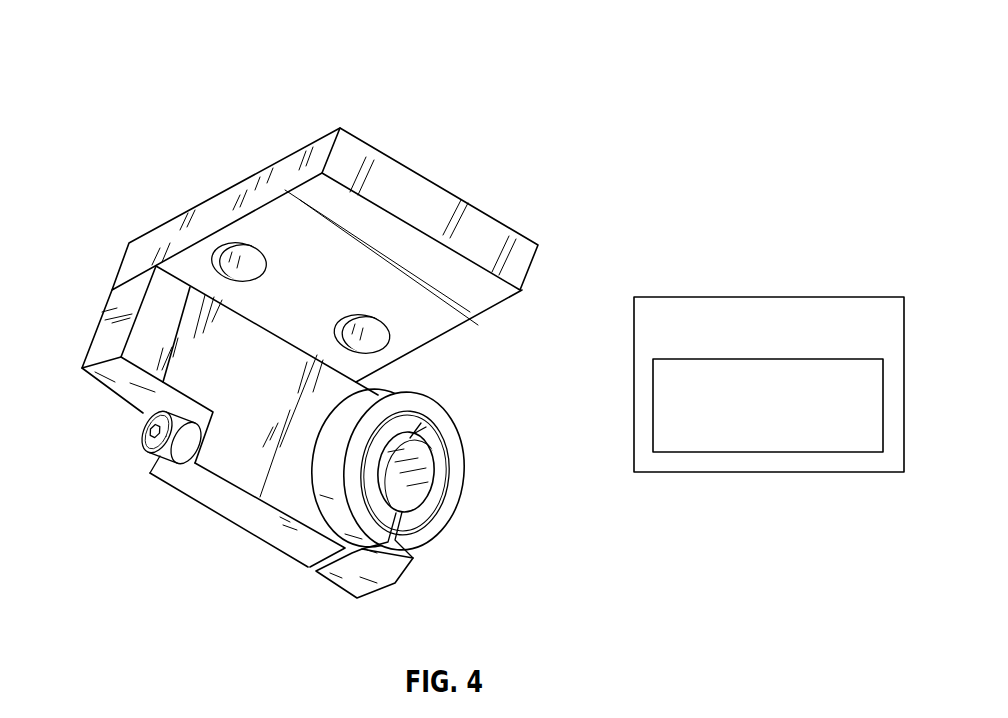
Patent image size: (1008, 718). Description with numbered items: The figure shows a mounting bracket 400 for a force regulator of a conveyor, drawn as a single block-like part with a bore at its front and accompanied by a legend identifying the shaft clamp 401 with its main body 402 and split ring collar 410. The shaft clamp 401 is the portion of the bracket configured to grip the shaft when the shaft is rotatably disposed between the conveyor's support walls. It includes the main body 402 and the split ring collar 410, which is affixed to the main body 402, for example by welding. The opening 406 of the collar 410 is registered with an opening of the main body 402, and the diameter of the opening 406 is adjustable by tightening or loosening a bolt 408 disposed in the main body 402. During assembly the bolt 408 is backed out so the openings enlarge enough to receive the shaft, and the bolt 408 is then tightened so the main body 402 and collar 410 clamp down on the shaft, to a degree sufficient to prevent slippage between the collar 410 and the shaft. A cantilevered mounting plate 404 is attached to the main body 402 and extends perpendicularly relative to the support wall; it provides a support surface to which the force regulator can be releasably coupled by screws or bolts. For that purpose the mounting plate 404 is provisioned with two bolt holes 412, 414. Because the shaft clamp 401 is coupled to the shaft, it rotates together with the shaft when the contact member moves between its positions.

The mounting bracket 400 is at (164, 126).
The shaft clamp 401 is at (702, 297).
The main body 402 is at (218, 440).
The cantilevered mounting plate 404 is at (415, 237).
The opening 406 is at (416, 484).
The bolt 408 is at (150, 432).
The split ring collar 410 is at (440, 453).
The bolt hole 412 is at (226, 266).
The bolt hole 414 is at (371, 339).